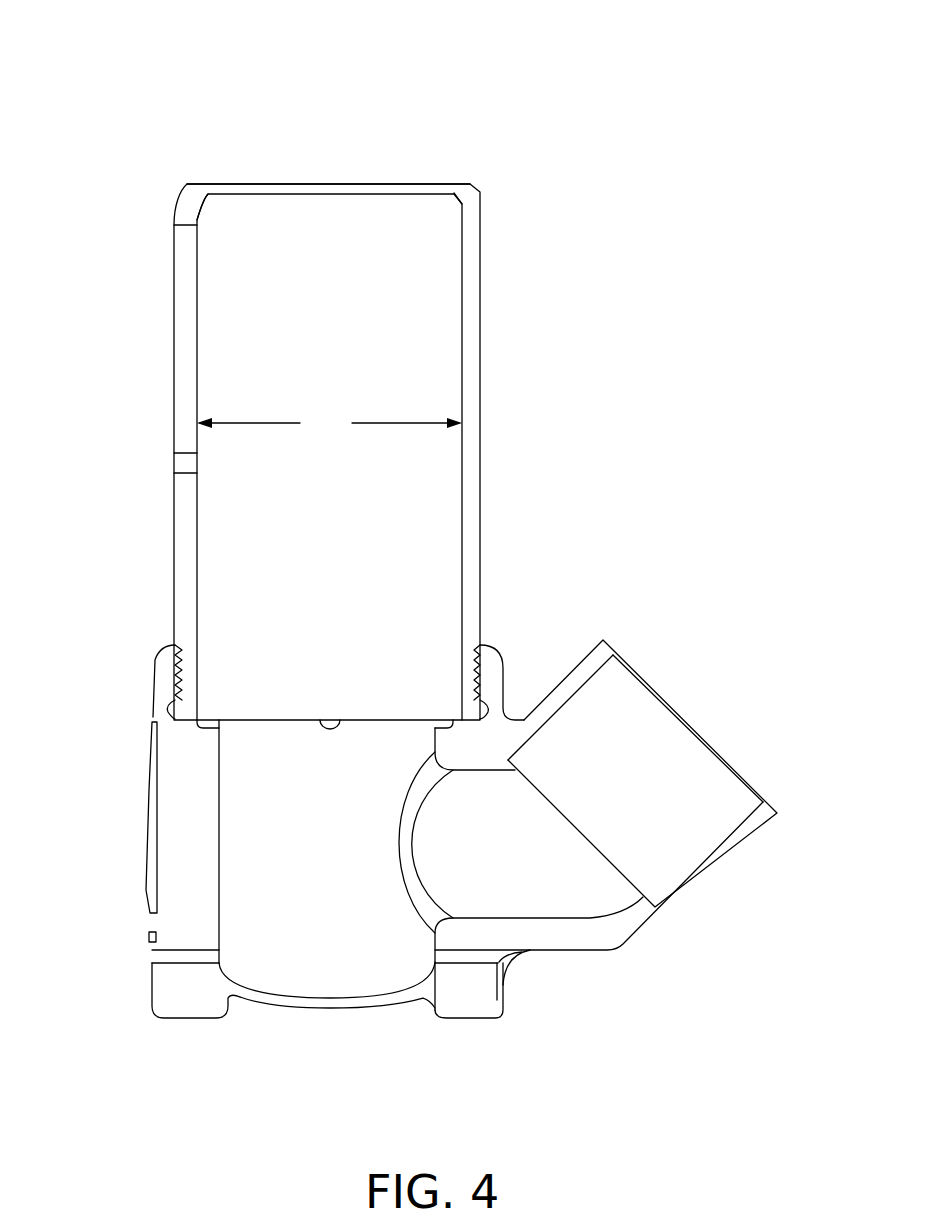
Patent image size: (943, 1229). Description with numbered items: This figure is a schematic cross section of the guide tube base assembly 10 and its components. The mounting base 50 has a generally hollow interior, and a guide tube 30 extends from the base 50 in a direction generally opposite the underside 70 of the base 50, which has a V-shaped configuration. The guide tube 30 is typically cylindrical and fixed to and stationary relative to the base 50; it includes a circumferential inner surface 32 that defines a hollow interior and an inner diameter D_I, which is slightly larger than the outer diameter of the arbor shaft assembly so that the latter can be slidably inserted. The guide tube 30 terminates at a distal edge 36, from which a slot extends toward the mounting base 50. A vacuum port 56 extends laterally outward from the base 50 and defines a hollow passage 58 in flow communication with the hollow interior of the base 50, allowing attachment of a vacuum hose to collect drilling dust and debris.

The guide tube base assembly 10 is at (78, 90).
The guide tube 30 is at (482, 280).
The circumferential inner surface 32 is at (200, 235).
The distal edge 36 is at (377, 183).
The mounting base 50 is at (166, 663).
The vacuum port 56 is at (578, 673).
The hollow passage 58 is at (684, 798).
The underside 70 is at (300, 1012).